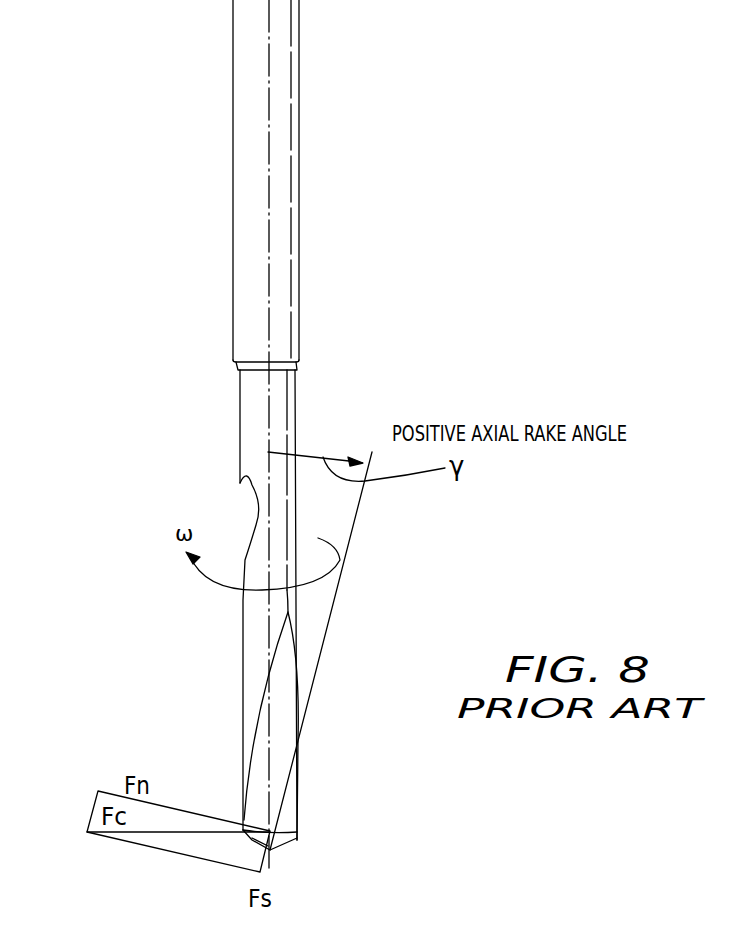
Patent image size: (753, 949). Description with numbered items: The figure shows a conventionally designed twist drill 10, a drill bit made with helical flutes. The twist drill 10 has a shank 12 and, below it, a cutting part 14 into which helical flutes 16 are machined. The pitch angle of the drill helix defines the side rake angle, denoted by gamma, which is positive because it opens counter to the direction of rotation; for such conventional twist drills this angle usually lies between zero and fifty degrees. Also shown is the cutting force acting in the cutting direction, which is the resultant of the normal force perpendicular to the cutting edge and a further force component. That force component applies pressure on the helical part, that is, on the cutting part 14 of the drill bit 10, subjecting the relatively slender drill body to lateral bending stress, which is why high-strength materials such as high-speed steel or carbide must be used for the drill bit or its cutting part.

The twist drill 10 is at (343, 436).
The shank 12 is at (282, 163).
The cutting part 14 is at (273, 628).
The helical flutes 16 is at (285, 742).